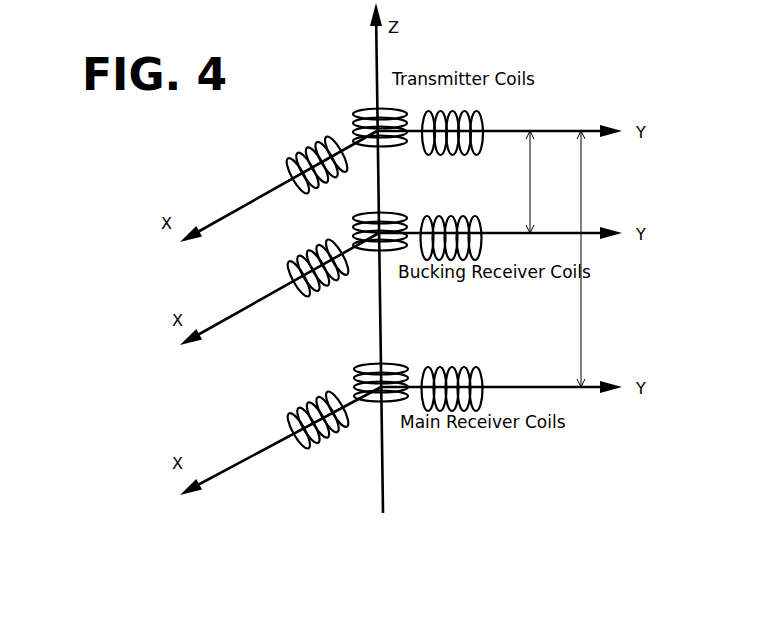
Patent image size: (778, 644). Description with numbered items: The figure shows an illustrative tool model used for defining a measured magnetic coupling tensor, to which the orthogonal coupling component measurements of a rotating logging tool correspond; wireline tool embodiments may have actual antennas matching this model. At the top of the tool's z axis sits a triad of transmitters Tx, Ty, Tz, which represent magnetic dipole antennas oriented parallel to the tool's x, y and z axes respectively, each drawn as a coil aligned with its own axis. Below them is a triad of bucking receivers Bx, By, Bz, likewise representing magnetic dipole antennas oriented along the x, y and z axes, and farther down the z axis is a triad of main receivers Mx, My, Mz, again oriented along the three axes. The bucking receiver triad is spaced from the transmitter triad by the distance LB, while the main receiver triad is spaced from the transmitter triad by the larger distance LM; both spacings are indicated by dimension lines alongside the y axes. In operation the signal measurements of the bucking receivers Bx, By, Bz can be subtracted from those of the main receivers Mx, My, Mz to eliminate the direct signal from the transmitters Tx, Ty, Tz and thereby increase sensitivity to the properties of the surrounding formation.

The x-axis transmitter Tx is at (308, 165).
The y-axis transmitter Ty is at (452, 126).
The z-axis transmitter Tz is at (372, 117).
The x-axis bucking receiver Bx is at (308, 268).
The y-axis bucking receiver By is at (451, 227).
The z-axis bucking receiver Bz is at (376, 222).
The x-axis main receiver Mx is at (306, 420).
The y-axis main receiver My is at (452, 382).
The z-axis main receiver Mz is at (372, 373).
The bucking receiver spacing LB is at (542, 182).
The main receiver spacing LM is at (594, 259).